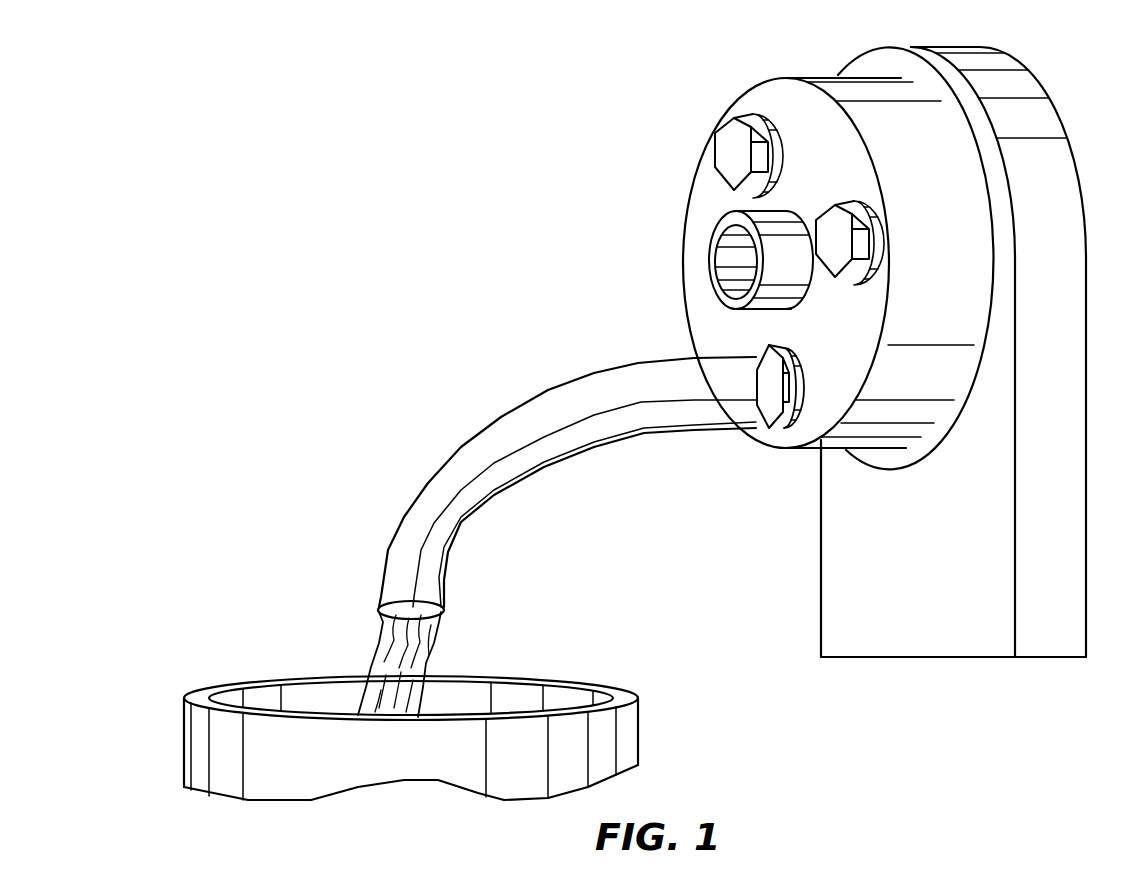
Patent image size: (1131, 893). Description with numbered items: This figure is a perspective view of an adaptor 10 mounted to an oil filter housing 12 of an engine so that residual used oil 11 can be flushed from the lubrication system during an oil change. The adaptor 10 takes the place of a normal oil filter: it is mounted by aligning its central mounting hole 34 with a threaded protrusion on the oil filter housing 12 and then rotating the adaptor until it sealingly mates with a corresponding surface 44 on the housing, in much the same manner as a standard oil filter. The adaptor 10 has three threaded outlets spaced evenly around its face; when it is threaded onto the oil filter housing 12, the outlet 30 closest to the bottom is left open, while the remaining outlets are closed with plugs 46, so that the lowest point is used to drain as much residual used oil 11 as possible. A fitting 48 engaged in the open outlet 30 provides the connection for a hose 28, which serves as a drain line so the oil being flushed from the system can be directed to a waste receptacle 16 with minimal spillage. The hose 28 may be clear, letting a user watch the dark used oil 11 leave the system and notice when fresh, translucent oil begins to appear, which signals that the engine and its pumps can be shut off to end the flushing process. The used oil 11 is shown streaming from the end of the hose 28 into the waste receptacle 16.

The adaptor 10 is at (649, 96).
The residual used oil 11 is at (438, 647).
The oil filter housing 12 is at (820, 605).
The waste receptacle 16 is at (260, 678).
The hose 28 is at (519, 404).
The outlet 30 is at (797, 365).
The central mounting hole 34 is at (729, 265).
The corresponding surface 44 is at (898, 68).
The plugs 46 is at (730, 152).
The fitting 48 is at (763, 413).